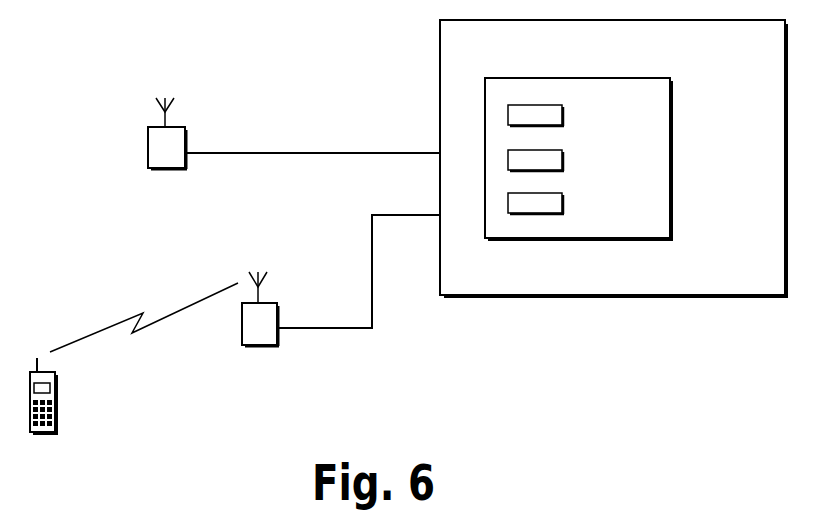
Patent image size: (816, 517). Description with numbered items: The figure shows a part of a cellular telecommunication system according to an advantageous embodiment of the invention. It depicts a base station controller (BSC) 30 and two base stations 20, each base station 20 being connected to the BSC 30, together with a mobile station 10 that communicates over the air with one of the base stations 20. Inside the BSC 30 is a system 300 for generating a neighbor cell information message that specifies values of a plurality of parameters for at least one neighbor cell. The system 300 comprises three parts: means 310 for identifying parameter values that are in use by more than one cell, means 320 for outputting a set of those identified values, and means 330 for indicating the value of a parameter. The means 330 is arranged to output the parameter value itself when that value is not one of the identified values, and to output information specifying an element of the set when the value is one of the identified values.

The mobile station 10 is at (54, 434).
The base station 20 is at (186, 128).
The base station controller (BSC) 30 is at (733, 297).
The system for generating a neighbor cell information message 300 is at (672, 109).
The means for identifying parameter values 310 is at (563, 117).
The means for outputting a set of identified values 320 is at (563, 162).
The means for indicating the value of a parameter 330 is at (563, 205).